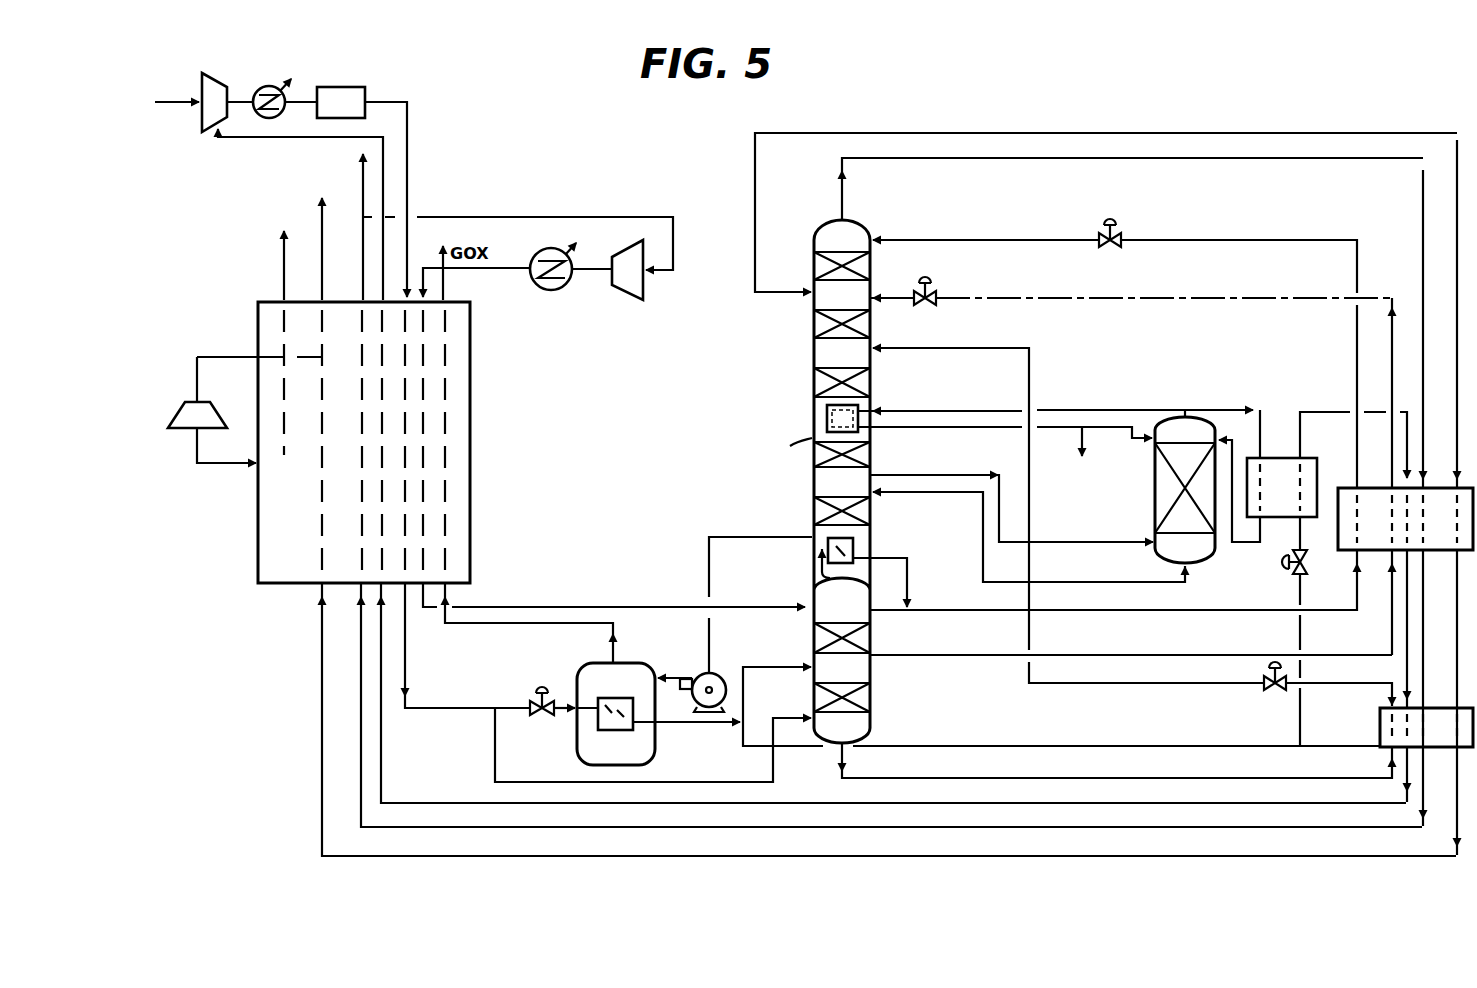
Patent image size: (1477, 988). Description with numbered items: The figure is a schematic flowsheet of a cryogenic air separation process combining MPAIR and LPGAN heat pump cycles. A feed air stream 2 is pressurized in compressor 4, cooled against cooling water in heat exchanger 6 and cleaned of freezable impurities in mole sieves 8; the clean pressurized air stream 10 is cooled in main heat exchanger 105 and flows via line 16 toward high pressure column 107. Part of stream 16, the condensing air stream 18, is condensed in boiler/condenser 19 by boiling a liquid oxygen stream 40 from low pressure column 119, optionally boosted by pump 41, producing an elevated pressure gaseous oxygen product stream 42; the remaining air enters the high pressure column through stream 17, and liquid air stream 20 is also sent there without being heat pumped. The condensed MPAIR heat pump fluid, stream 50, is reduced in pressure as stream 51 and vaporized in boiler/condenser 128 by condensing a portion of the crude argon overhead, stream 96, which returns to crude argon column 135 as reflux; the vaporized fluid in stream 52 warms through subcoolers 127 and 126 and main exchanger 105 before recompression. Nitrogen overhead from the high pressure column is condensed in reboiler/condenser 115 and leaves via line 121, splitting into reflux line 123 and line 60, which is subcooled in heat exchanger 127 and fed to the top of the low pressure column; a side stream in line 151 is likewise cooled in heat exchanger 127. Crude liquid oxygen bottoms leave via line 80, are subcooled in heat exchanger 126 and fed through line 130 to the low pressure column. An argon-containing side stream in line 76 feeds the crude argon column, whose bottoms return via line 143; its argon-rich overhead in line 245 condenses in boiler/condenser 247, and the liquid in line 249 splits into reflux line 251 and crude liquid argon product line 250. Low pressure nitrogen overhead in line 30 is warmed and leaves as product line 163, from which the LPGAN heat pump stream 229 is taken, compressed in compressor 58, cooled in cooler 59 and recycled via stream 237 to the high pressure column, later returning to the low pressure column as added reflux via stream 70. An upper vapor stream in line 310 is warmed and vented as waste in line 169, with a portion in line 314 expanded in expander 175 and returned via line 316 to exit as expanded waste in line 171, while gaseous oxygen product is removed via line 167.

The feed air stream 2 is at (184, 98).
The compressor 4 is at (226, 86).
The heat exchanger 6 is at (262, 88).
The mole sieves 8 is at (330, 87).
The clean pressurized air stream 10 is at (407, 201).
The LPGAN heat pump stream 229 is at (541, 218).
The waste line 169 is at (323, 235).
The low pressure nitrogen product line 163 is at (362, 287).
The expanded waste line 171 is at (285, 262).
The gaseous oxygen product line 167 is at (445, 279).
The cooler 59 is at (552, 291).
The compressor 58 is at (612, 288).
The line 314 is at (239, 357).
The expander 175 is at (184, 404).
The line 316 is at (220, 465).
The main heat exchanger 105 is at (257, 548).
The upper vapor stream line 310 is at (756, 218).
The low pressure nitrogen-rich overhead line 30 is at (844, 208).
The reflux stream 70 is at (991, 243).
The crude liquid oxygen line 130 is at (928, 348).
The low pressure column 119 is at (812, 356).
The boiler/condenser 247 is at (860, 406).
The condensed argon-rich liquid line 249 is at (922, 428).
The argon-containing side stream line 76 is at (938, 476).
The liquid oxygen stream 40 is at (767, 537).
The recycle stream 237 is at (591, 605).
The boiler/condenser 19 is at (592, 668).
The elevated pressure gaseous oxygen product stream 42 is at (619, 652).
The pump 41 is at (702, 674).
The air stream 16 is at (450, 707).
The condensing air stream 18 is at (503, 707).
The air stream 17 is at (495, 750).
The liquid air stream 20 is at (789, 669).
The reboiler/condenser 115 is at (865, 565).
The line 121 is at (905, 596).
The reflux line 123 is at (893, 613).
The high pressure column 107 is at (872, 670).
The argon-rich vapor overhead line 245 is at (1141, 406).
The crude argon overhead stream 96 is at (1199, 413).
The vaporized MPAIR heat pump fluid stream 52 is at (1322, 411).
The boiler/condenser 128 is at (1312, 458).
The crude liquid argon product line 250 is at (1062, 449).
The crude argon column reflux line 251 is at (1130, 428).
The crude argon column 135 is at (1154, 466).
The bottoms recycle line 143 is at (1105, 584).
The reduced pressure heat pump fluid stream 51 is at (1303, 545).
The MPAIR heat pump fluid stream 50 is at (1302, 600).
The line 60 is at (1106, 611).
The side stream line 151 is at (1206, 656).
The heat exchanger 127 is at (1372, 553).
The heat exchanger 126 is at (1378, 720).
The crude liquid oxygen bottoms line 80 is at (1192, 779).